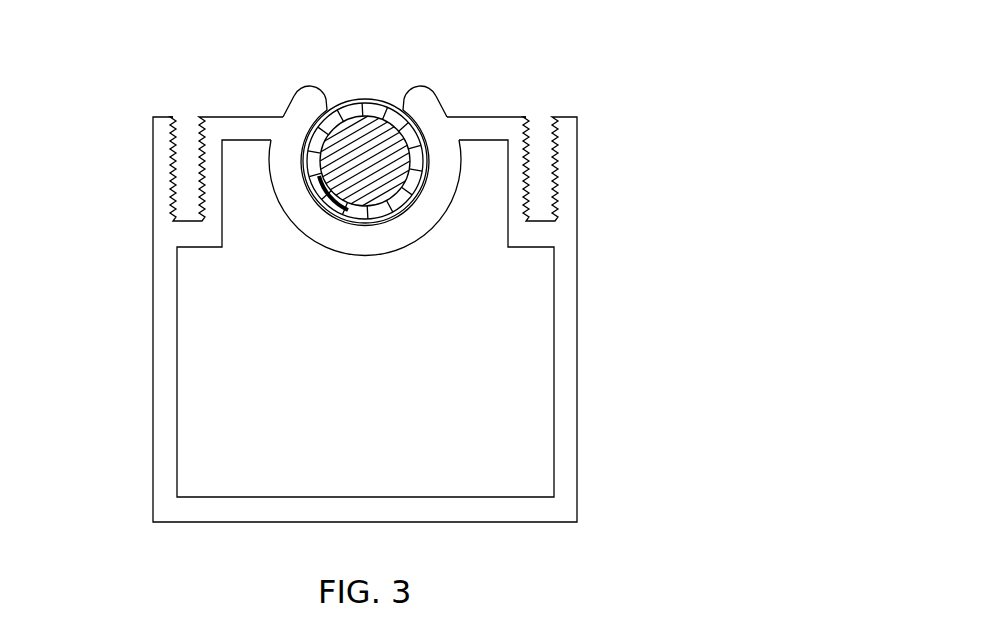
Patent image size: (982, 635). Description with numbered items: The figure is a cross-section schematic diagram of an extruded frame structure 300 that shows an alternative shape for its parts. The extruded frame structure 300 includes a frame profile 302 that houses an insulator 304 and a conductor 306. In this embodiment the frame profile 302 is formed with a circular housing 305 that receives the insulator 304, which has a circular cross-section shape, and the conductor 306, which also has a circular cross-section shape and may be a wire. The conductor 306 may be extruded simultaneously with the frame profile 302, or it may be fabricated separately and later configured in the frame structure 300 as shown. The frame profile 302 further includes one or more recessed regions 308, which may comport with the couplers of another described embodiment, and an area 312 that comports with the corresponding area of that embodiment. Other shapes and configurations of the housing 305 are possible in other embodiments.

The extruded frame structure 300 is at (406, 266).
The frame profile 302 is at (158, 337).
The insulator 304 is at (357, 107).
The circular housing 305 is at (342, 238).
The conductor 306 is at (400, 137).
The recessed regions 308 is at (192, 173).
The area 312 is at (377, 365).